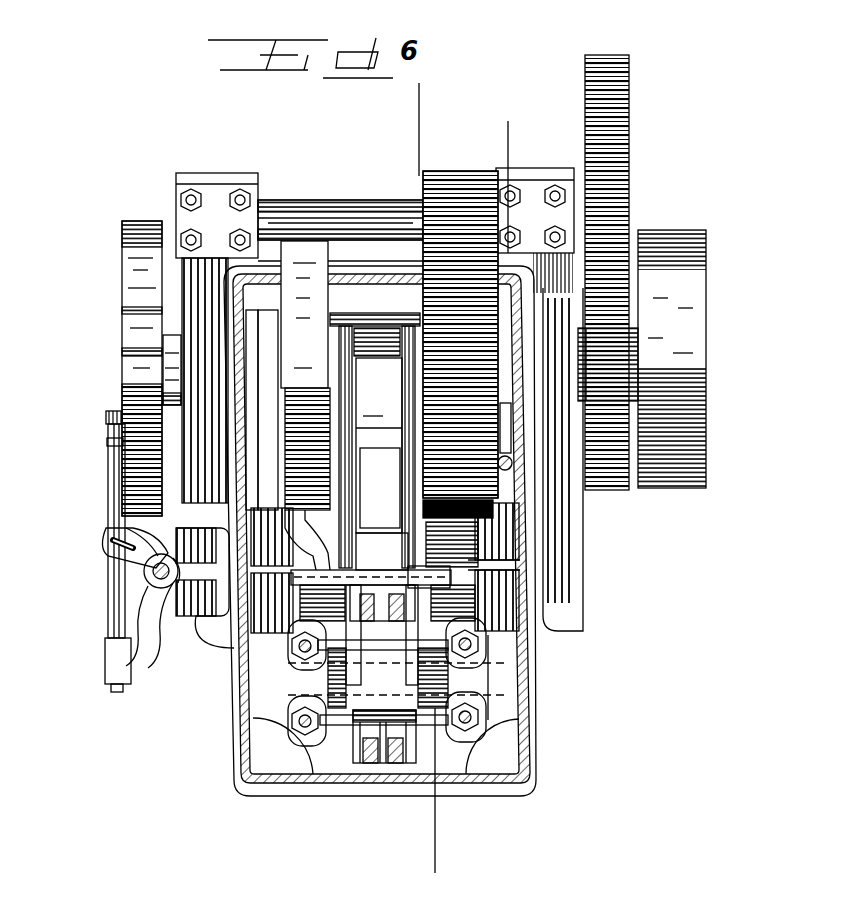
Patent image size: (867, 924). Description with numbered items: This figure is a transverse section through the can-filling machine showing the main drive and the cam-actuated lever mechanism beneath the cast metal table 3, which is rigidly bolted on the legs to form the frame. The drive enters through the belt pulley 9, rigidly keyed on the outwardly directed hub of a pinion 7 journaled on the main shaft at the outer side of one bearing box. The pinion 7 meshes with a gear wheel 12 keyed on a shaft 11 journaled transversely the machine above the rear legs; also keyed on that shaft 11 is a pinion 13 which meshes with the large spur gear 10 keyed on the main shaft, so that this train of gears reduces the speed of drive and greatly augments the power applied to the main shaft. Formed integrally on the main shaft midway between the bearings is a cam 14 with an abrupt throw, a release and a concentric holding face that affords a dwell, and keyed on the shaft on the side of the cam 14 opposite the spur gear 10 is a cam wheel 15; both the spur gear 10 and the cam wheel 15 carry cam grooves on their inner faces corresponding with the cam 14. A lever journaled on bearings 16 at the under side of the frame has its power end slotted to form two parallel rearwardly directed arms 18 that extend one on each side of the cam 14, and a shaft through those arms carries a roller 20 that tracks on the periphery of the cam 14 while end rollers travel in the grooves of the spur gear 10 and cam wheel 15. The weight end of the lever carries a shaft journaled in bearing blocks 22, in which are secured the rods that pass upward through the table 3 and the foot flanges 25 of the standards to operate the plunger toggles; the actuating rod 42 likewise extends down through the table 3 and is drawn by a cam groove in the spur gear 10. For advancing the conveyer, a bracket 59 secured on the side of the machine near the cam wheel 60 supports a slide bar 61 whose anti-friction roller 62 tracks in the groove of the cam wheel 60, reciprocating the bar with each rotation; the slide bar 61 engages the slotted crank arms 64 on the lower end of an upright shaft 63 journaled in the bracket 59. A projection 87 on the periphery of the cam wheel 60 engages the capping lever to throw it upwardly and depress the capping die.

The table 3 is at (382, 772).
The pinion 7 is at (614, 392).
The belt pulley 9 is at (690, 402).
The spur gear 10 is at (438, 292).
The shaft 11 is at (335, 215).
The gear wheel 12 is at (617, 128).
The pinion 13 is at (452, 182).
The cam 14 is at (532, 647).
The cam wheel 15 is at (288, 240).
The bearings 16 is at (268, 610).
The arms 18 is at (396, 455).
The roller 20 is at (366, 325).
The bearing blocks 22 is at (285, 648).
The foot flanges 25 is at (400, 771).
The actuating rod 42 is at (503, 440).
The bracket 59 is at (146, 633).
The cam wheel 60 is at (130, 282).
The slide bar 61 is at (100, 601).
The anti-friction roller 62 is at (105, 428).
The upright shaft 63 is at (145, 566).
The slotted crank arms 64 is at (98, 536).
The projection 87 is at (130, 322).